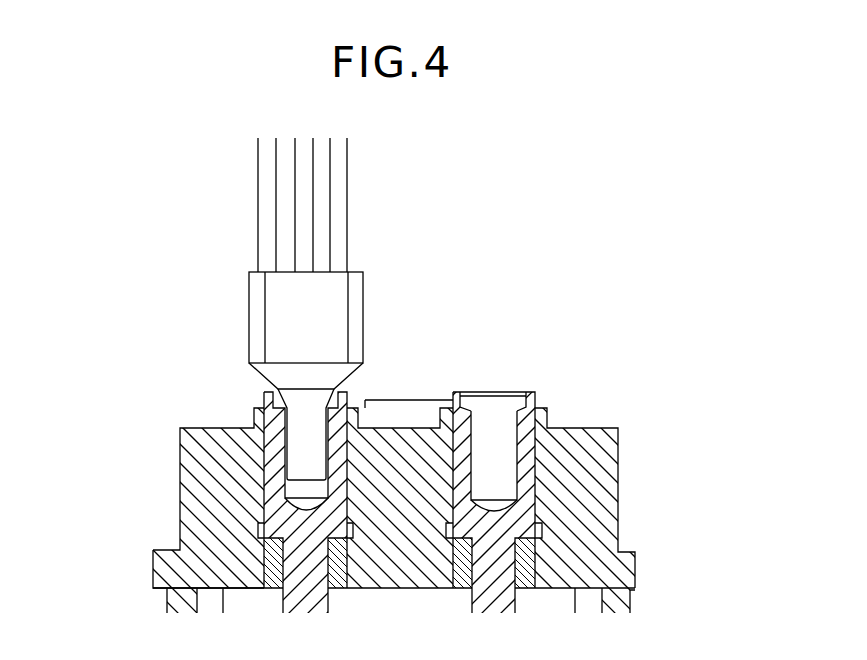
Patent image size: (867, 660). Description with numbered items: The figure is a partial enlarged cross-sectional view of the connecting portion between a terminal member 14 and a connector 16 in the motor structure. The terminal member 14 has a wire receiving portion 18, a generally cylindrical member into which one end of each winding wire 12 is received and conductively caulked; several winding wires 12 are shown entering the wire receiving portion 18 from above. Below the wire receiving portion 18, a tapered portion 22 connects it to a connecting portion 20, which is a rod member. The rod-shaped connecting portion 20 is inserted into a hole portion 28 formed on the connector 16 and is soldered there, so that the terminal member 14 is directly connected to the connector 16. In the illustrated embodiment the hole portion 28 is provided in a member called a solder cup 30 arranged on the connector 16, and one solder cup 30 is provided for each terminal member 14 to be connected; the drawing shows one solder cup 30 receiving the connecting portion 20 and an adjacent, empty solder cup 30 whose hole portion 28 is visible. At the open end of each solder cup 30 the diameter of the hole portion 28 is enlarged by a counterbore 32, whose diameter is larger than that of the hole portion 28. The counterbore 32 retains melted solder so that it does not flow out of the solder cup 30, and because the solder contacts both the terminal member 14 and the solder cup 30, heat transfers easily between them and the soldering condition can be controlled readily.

The winding wire 12 is at (265, 188).
The terminal member 14 is at (263, 309).
The connector 16 is at (186, 514).
The wire receiving portion 18 is at (277, 313).
The connecting portion 20 is at (298, 430).
The tapered portion 22 is at (327, 377).
The hole portion 28 is at (500, 433).
The solder cup 30 is at (490, 464).
The counterbore 32 is at (477, 386).